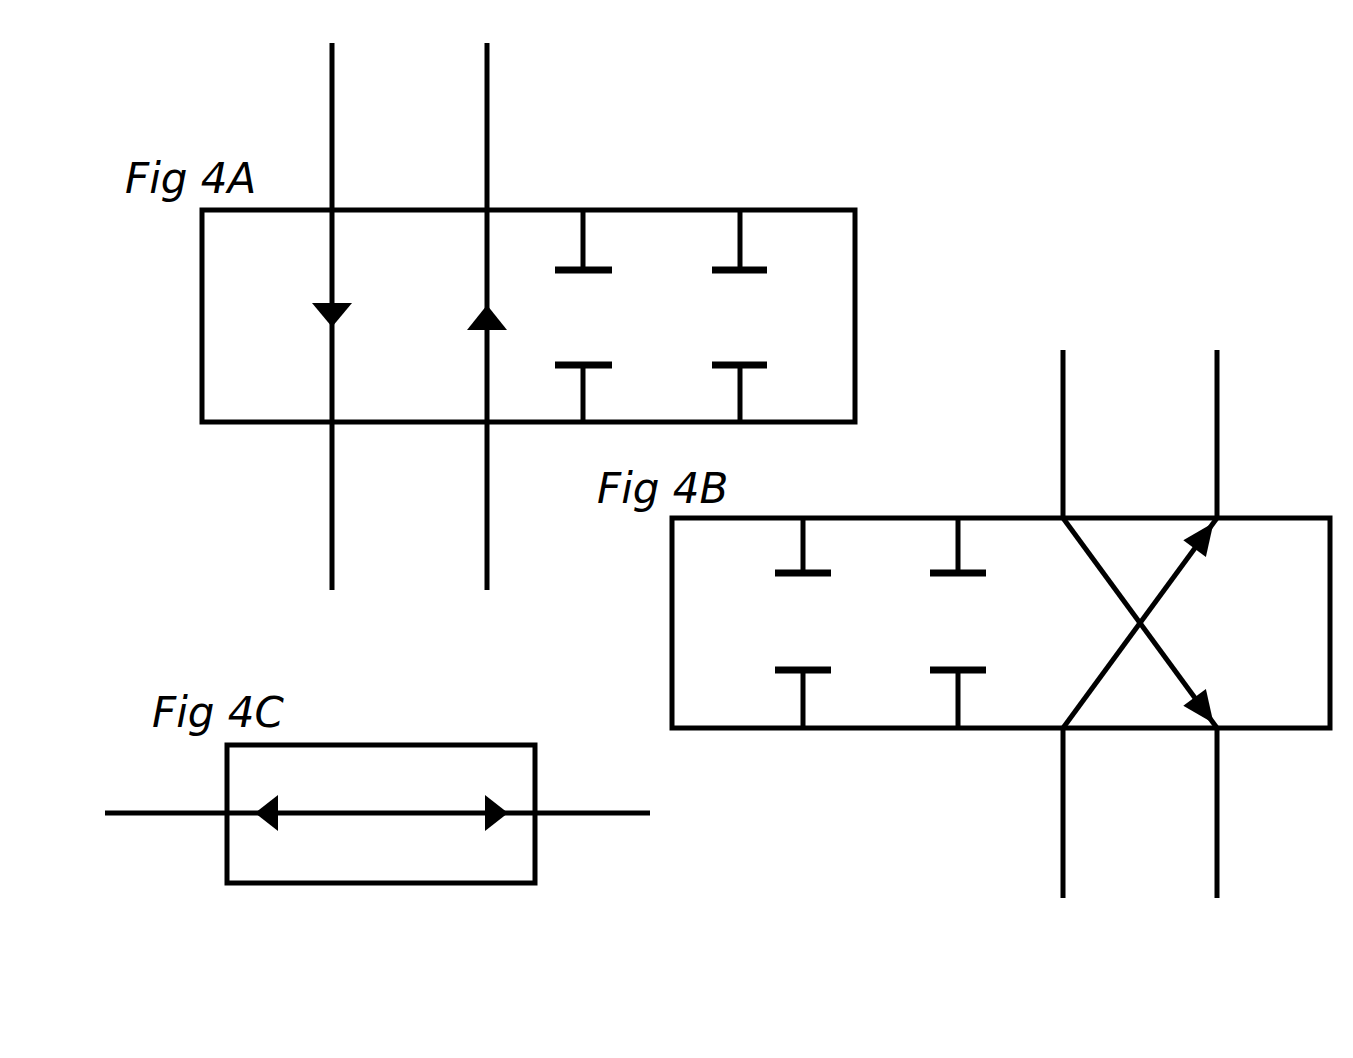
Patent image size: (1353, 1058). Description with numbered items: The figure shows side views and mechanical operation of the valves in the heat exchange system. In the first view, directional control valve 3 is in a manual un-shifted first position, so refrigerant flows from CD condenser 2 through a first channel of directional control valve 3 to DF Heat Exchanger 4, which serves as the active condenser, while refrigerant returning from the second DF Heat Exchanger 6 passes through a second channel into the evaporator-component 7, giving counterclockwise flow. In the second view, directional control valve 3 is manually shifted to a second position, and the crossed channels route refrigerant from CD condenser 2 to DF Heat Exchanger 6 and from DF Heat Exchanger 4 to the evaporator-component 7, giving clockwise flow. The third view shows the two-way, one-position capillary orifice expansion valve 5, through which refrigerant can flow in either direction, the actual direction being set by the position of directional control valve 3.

In FIG. 4A, the CD condenser 2 is at (332, 95).
In FIG. 4B, the CD condenser 2 is at (1063, 408).
In FIG. 4A, the directional control valve 3 is at (200, 368).
In FIG. 4B, the directional control valve 3 is at (672, 676).
In FIG. 4A, the DF Heat Exchanger 4 is at (332, 570).
In FIG. 4B, the DF Heat Exchanger 4 is at (1063, 873).
In FIG. 4C, the DF Heat Exchanger 4 is at (152, 815).
In FIG. 4C, the expansion valve 5 is at (396, 885).
In FIG. 4A, the DF Heat Exchanger 6 is at (487, 570).
In FIG. 4B, the DF Heat Exchanger 6 is at (1217, 873).
In FIG. 4C, the DF Heat Exchanger 6 is at (598, 815).
In FIG. 4A, the evaporator-component 7 is at (487, 95).
In FIG. 4B, the evaporator-component 7 is at (1217, 408).